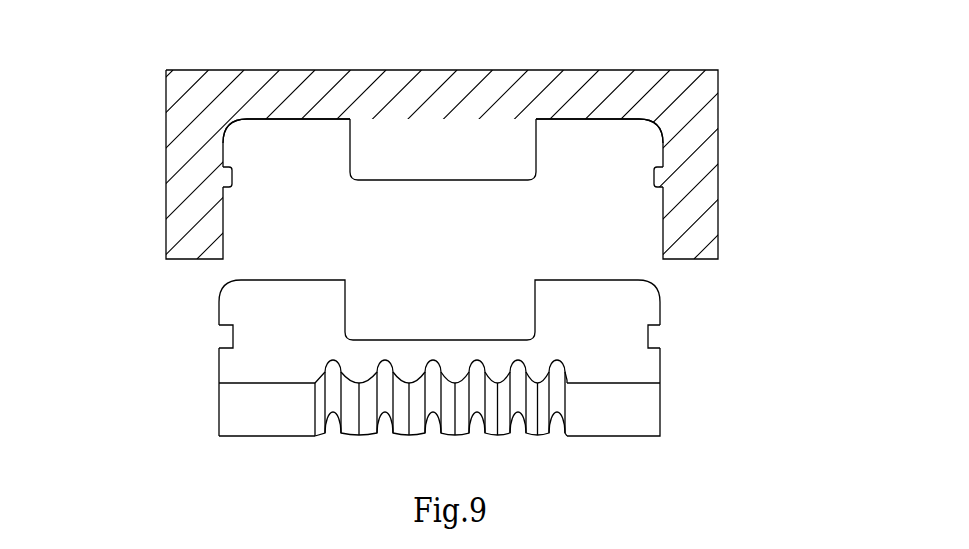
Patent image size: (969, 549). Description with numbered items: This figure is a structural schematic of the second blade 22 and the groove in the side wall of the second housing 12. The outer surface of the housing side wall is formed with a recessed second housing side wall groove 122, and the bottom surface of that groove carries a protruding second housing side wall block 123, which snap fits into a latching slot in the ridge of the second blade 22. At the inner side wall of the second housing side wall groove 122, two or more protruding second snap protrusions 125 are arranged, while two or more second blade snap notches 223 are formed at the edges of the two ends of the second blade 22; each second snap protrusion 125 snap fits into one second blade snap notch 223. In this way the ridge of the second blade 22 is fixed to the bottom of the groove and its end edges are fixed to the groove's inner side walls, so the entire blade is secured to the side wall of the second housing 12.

The second housing 12 is at (693, 135).
The second housing side wall groove 122 is at (583, 157).
The second housing side wall block 123 is at (453, 140).
The second snap protrusion 125 is at (225, 175).
The second blade 22 is at (618, 415).
The second blade snap notch 223 is at (223, 340).